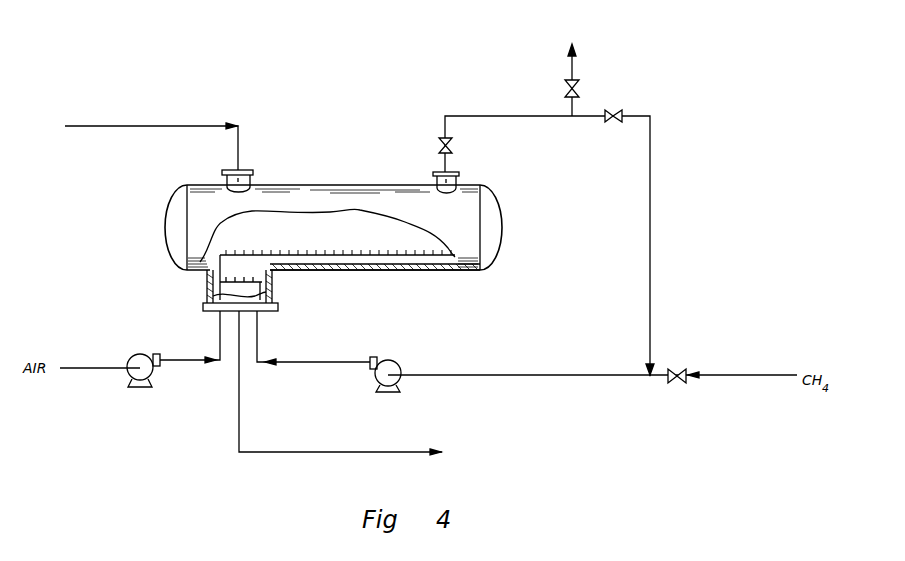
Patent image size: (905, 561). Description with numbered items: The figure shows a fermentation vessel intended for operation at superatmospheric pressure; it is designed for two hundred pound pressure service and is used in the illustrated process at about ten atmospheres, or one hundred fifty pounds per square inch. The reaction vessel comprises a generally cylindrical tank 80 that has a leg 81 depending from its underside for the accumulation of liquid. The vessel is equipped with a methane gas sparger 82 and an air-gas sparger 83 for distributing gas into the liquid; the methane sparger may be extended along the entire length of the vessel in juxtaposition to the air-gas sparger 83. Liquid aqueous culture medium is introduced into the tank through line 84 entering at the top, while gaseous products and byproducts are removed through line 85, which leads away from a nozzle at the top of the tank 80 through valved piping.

The cylindrical tank 80 is at (290, 186).
The leg 81 is at (207, 290).
The methane gas sparger 82 is at (270, 297).
The air-gas sparger 83 is at (342, 263).
The line 84 is at (148, 127).
The line 85 is at (480, 116).